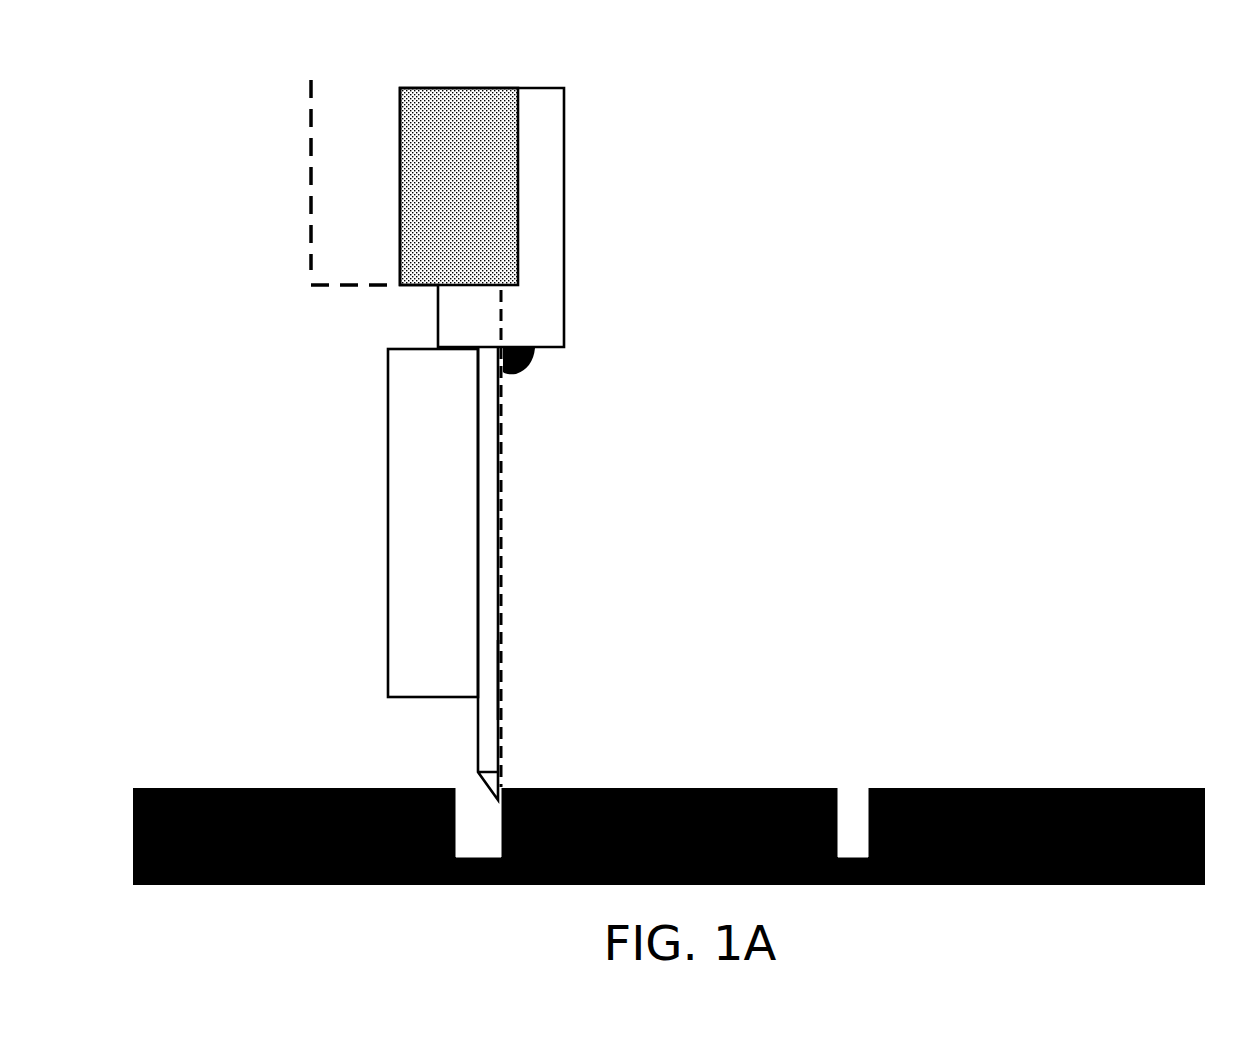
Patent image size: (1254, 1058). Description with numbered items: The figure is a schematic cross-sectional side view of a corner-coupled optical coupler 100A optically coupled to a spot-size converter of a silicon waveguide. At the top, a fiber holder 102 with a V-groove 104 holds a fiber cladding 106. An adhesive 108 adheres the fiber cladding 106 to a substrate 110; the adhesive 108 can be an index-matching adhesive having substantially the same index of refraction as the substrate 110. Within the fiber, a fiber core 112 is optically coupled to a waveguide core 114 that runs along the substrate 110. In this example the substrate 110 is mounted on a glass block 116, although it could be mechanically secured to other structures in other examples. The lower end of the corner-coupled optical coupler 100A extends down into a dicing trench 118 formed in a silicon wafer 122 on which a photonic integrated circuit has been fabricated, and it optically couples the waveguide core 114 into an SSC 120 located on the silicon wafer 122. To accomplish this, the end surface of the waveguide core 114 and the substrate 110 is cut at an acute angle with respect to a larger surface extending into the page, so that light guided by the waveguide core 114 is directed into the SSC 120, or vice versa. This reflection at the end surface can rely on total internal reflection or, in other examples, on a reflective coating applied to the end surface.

The corner-coupled optical coupler 100A is at (323, 514).
The fiber holder 102 is at (310, 250).
The V-groove 104 is at (452, 130).
The fiber cladding 106 is at (564, 157).
The adhesive 108 is at (528, 364).
The substrate 110 is at (488, 570).
The fiber core 112 is at (501, 327).
The waveguide core 114 is at (502, 677).
The glass block 116 is at (421, 534).
The dicing trench 118 is at (499, 850).
The SSC 120 is at (718, 788).
The silicon wafer 122 is at (805, 788).